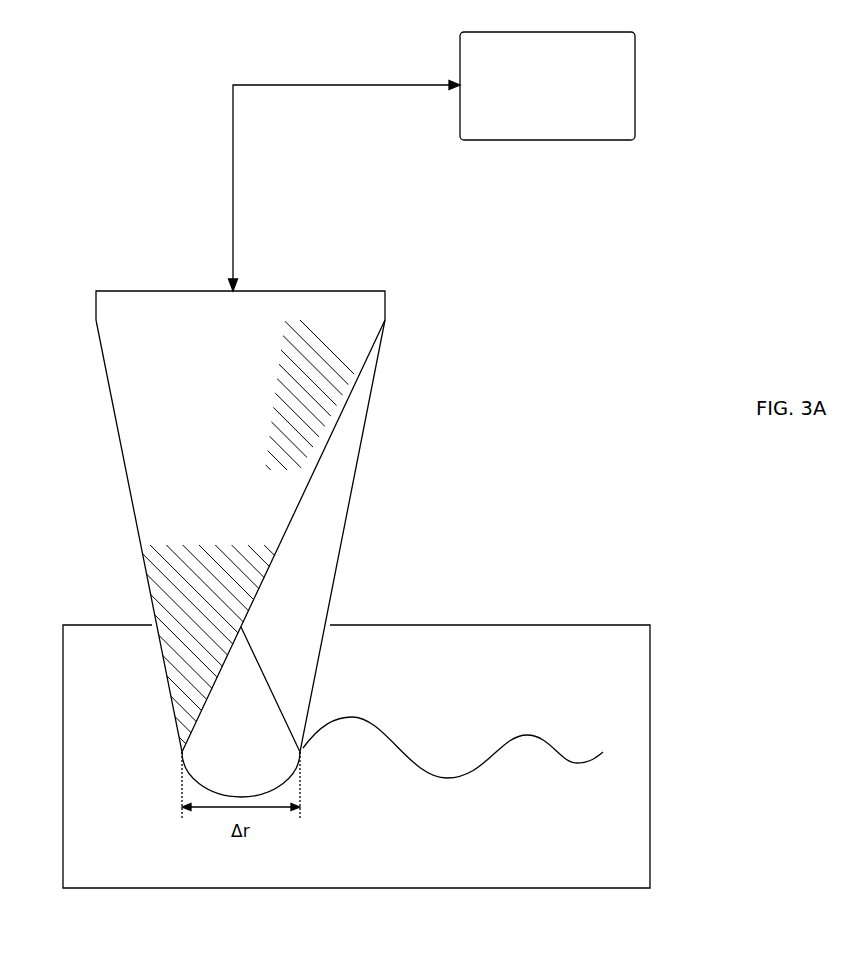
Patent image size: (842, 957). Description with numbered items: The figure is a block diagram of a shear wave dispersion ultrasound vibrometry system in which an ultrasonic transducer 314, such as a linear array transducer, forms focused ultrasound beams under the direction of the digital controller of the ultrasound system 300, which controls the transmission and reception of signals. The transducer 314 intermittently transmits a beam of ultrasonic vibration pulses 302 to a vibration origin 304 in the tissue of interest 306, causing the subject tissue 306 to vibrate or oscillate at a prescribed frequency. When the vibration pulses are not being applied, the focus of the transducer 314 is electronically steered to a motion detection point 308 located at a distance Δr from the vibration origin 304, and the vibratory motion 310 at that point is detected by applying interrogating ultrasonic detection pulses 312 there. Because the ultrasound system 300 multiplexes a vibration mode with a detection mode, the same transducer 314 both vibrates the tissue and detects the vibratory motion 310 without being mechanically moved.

The ultrasound system 300 is at (548, 140).
The beam of ultrasonic vibration pulses 302 is at (137, 535).
The vibration origin 304 is at (182, 752).
The tissue of interest 306 is at (589, 860).
The motion detection point 308 is at (300, 751).
The vibratory motion 310 is at (527, 728).
The interrogating ultrasonic detection pulses 312 is at (363, 430).
The ultrasonic transducer 314 is at (157, 290).